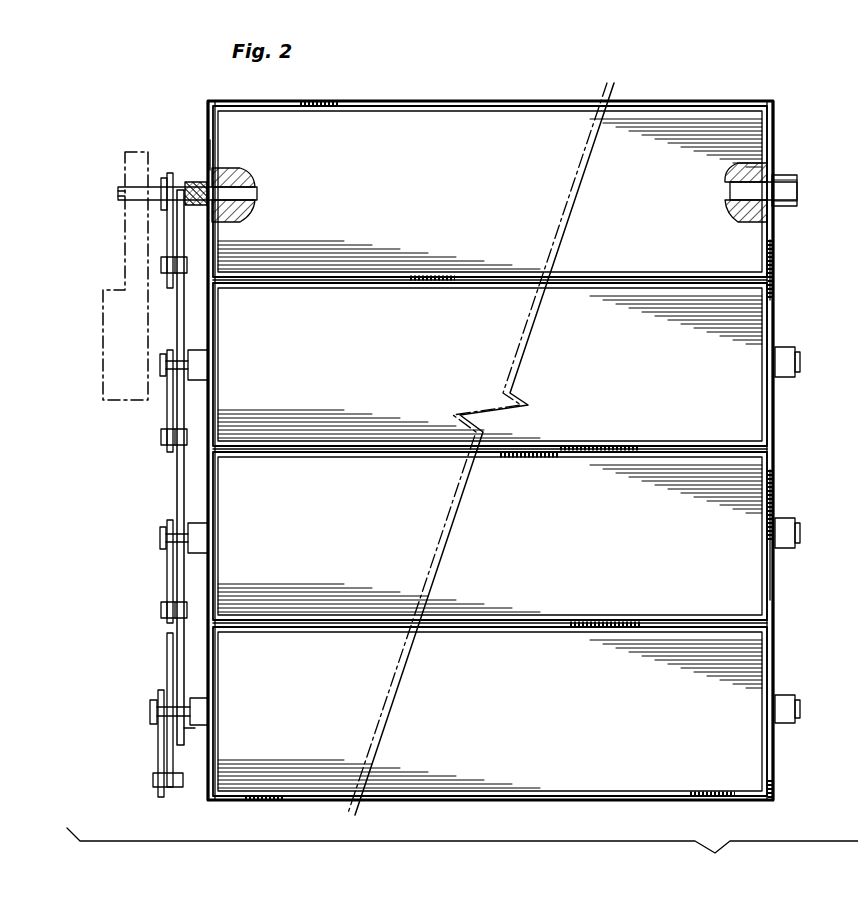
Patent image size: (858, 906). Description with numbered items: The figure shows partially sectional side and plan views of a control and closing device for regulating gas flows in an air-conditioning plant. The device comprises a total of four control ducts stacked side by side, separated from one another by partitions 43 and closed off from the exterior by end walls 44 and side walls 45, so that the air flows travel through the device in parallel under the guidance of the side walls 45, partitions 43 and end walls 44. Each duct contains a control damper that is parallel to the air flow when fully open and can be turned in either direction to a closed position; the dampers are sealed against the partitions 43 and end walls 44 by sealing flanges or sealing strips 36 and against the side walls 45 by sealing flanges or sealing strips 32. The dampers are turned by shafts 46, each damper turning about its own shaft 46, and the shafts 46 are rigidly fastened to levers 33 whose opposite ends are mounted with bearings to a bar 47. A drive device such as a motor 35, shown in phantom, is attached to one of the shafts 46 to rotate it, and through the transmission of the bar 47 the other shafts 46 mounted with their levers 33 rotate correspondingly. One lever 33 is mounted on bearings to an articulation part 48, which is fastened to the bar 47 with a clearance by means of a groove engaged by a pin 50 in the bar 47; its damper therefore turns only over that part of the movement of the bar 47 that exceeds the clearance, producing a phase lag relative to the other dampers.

The sealing flanges or sealing strips 32 is at (213, 128).
The levers 33 is at (167, 230).
The motor 35 is at (103, 350).
The sealing flanges or sealing strips 36 is at (412, 106).
The partitions 43 is at (755, 278).
The end walls 44 is at (720, 101).
The side walls 45 is at (213, 150).
The shafts 46 is at (120, 193).
The bar 47 is at (178, 470).
The articulation part 48 is at (170, 660).
The pin 50 is at (185, 732).